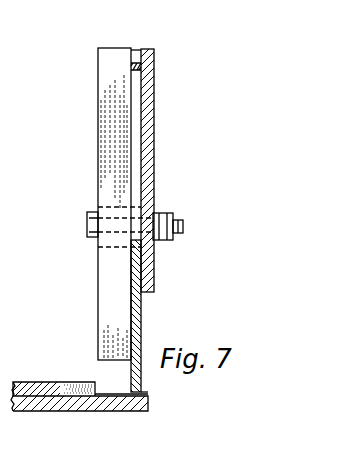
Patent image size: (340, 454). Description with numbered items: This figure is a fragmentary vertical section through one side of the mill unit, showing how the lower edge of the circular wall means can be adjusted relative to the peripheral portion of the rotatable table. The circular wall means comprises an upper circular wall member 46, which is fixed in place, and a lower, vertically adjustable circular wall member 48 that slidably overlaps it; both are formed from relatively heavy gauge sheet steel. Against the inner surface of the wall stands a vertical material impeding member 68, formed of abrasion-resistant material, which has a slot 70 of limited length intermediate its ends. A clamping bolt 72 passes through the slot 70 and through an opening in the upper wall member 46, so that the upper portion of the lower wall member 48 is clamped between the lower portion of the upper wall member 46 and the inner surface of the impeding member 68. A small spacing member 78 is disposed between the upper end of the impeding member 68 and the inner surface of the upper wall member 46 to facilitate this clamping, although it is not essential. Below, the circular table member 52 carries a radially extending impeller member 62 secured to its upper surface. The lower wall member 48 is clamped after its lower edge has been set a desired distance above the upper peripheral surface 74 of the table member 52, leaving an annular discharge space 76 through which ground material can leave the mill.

The upper circular wall member 46 is at (157, 158).
The lower circular wall member 48 is at (141, 322).
The circular table member 52 is at (45, 411).
The impeller member 62 is at (30, 382).
The material impeding member 68 is at (105, 143).
The slot 70 is at (105, 204).
The clamping bolt 72 is at (88, 228).
The upper peripheral surface 74 is at (107, 392).
The annular discharge space 76 is at (147, 392).
The spacing member 78 is at (137, 57).